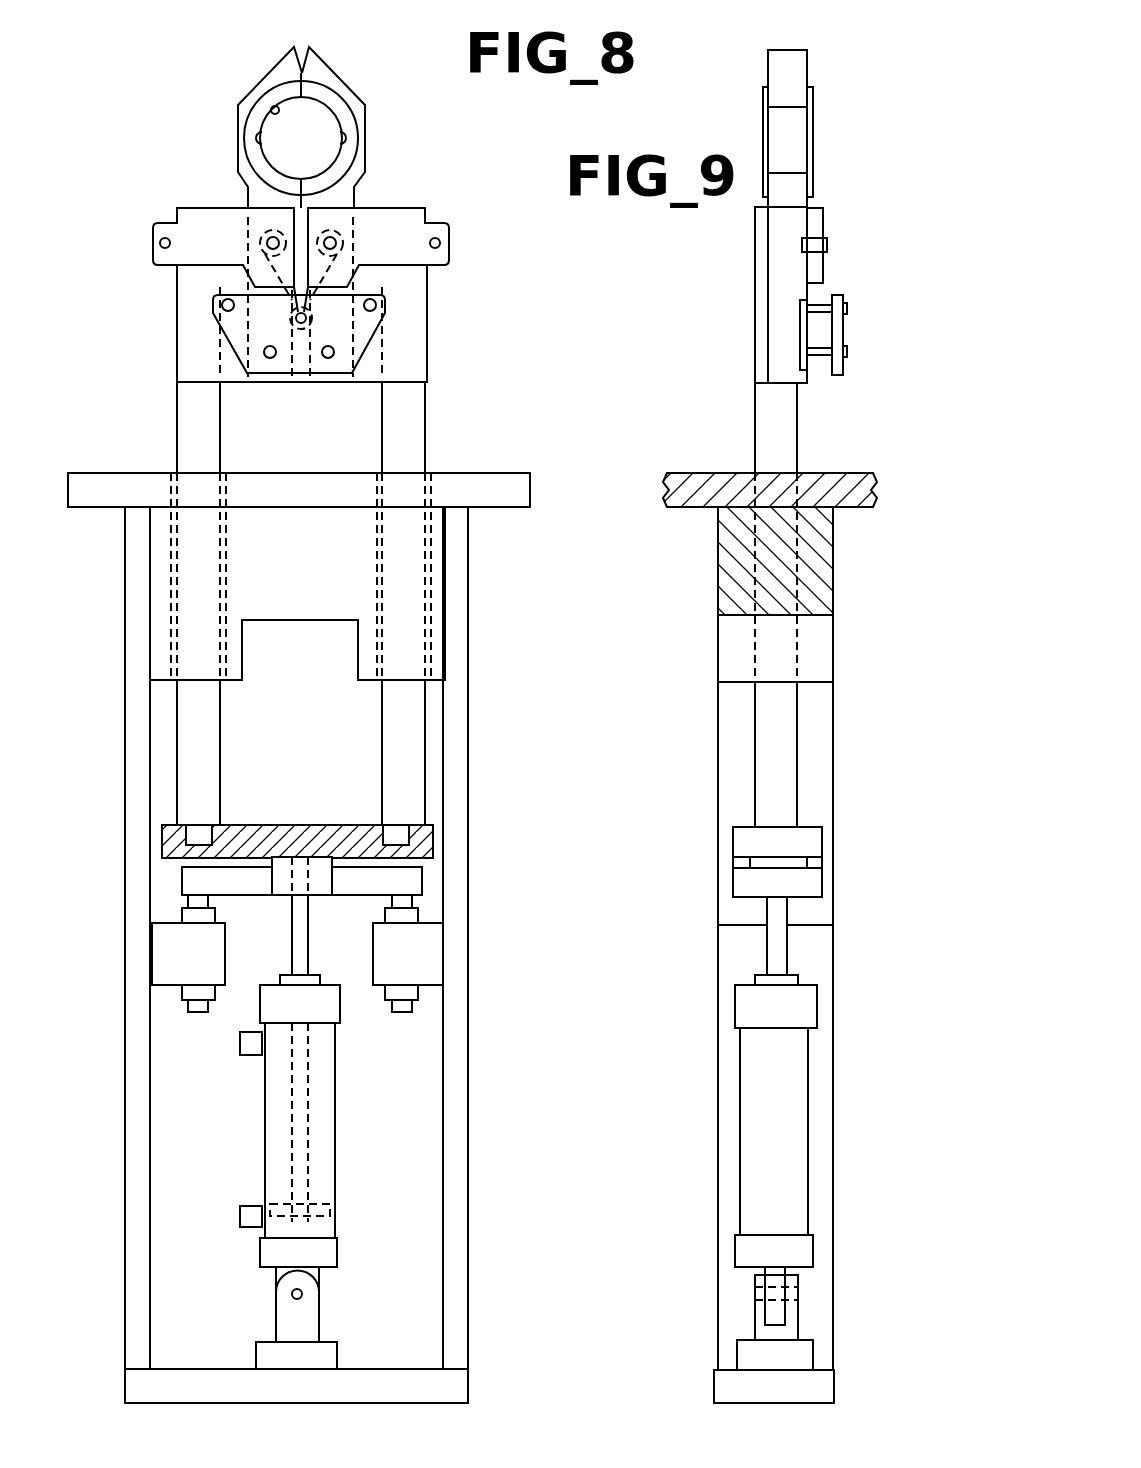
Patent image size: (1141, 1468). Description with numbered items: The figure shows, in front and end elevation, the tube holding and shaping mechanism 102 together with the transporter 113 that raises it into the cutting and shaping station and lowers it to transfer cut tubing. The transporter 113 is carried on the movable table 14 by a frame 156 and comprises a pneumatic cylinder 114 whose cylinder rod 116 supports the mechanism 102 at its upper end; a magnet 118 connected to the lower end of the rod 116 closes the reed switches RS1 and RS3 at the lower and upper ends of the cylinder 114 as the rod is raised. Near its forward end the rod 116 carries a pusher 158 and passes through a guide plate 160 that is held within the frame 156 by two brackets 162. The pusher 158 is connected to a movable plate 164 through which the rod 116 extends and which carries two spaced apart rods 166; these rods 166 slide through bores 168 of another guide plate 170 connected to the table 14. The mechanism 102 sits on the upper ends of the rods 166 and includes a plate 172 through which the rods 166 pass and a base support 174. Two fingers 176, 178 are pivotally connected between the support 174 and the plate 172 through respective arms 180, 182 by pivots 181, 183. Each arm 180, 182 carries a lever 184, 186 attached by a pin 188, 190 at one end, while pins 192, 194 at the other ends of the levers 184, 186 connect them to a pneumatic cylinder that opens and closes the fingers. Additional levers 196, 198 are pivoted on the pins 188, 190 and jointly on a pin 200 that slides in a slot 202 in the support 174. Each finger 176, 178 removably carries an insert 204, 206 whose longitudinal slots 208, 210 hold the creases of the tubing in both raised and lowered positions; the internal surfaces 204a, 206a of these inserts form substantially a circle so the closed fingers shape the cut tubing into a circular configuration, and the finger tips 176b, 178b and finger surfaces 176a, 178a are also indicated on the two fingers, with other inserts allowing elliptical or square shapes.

In FIG. 8, the movable table 14 is at (500, 473).
In FIG. 9, the movable table 14 is at (860, 473).
In FIG. 8, the holding and shaping mechanism 102 is at (445, 105).
In FIG. 9, the holding and shaping mechanism 102 is at (833, 107).
In FIG. 8, the transporter 113 is at (488, 660).
In FIG. 8, the pneumatic cylinder 114 is at (336, 1128).
In FIG. 9, the pneumatic cylinder 114 is at (810, 1122).
In FIG. 8, the cylinder rod 116 is at (315, 1086).
In FIG. 8, the magnet 118 is at (318, 1198).
In FIG. 8, the frame 156 is at (460, 1070).
In FIG. 8, the pusher 158 is at (278, 892).
In FIG. 8, the guide plate 160 is at (415, 878).
In FIG. 9, the guide plate 160 is at (812, 882).
In FIG. 8, the brackets 162 is at (160, 958).
In FIG. 8, the movable plate 164 is at (432, 840).
In FIG. 9, the movable plate 164 is at (812, 843).
In FIG. 8, the rods 166 is at (185, 731).
In FIG. 9, the rods 166 is at (782, 752).
In FIG. 8, the bores 168 is at (170, 605).
In FIG. 8, the guide plate 170 is at (290, 550).
In FIG. 9, the guide plate 170 is at (822, 578).
In FIG. 8, the plate 172 is at (410, 327).
In FIG. 9, the plate 172 is at (755, 310).
In FIG. 8, the base support 174 is at (352, 366).
In FIG. 9, the base support 174 is at (843, 375).
In FIG. 8, the finger 176 is at (365, 176).
In FIG. 9, the finger 176 is at (790, 150).
In FIG. 8, the internal surface 176a is at (304, 74).
In FIG. 8, the finger tip 176b is at (309, 46).
In FIG. 8, the finger 178 is at (238, 178).
In FIG. 8, the internal surface 178a is at (299, 74).
In FIG. 8, the finger tip 178b is at (294, 46).
In FIG. 8, the arm 180 is at (376, 305).
In FIG. 8, the pivot 181 is at (328, 358).
In FIG. 8, the arm 182 is at (222, 305).
In FIG. 8, the pivot 183 is at (269, 358).
In FIG. 9, the pivot 183 is at (848, 353).
In FIG. 8, the lever 184 is at (438, 222).
In FIG. 8, the lever 186 is at (160, 222).
In FIG. 9, the lever 186 is at (825, 222).
In FIG. 8, the pin 188 is at (336, 235).
In FIG. 8, the pin 190 is at (268, 235).
In FIG. 8, the pin 192 is at (440, 243).
In FIG. 8, the pin 194 is at (160, 243).
In FIG. 9, the pin 194 is at (830, 245).
In FIG. 8, the additional lever 196 is at (382, 280).
In FIG. 8, the additional lever 198 is at (262, 277).
In FIG. 9, the additional lever 198 is at (805, 297).
In FIG. 8, the pin 200 is at (306, 320).
In FIG. 8, the slot 202 is at (296, 320).
In FIG. 8, the insert 204 is at (335, 112).
In FIG. 9, the insert 204 is at (763, 115).
In FIG. 8, the internal surface 204a is at (301, 138).
In FIG. 8, the insert 206 is at (272, 102).
In FIG. 8, the internal surface 206a is at (272, 108).
In FIG. 8, the slot 208 is at (348, 138).
In FIG. 8, the slot 210 is at (258, 136).
In FIG. 8, the reed switch RS1 is at (240, 1216).
In FIG. 8, the reed switch RS3 is at (240, 1041).